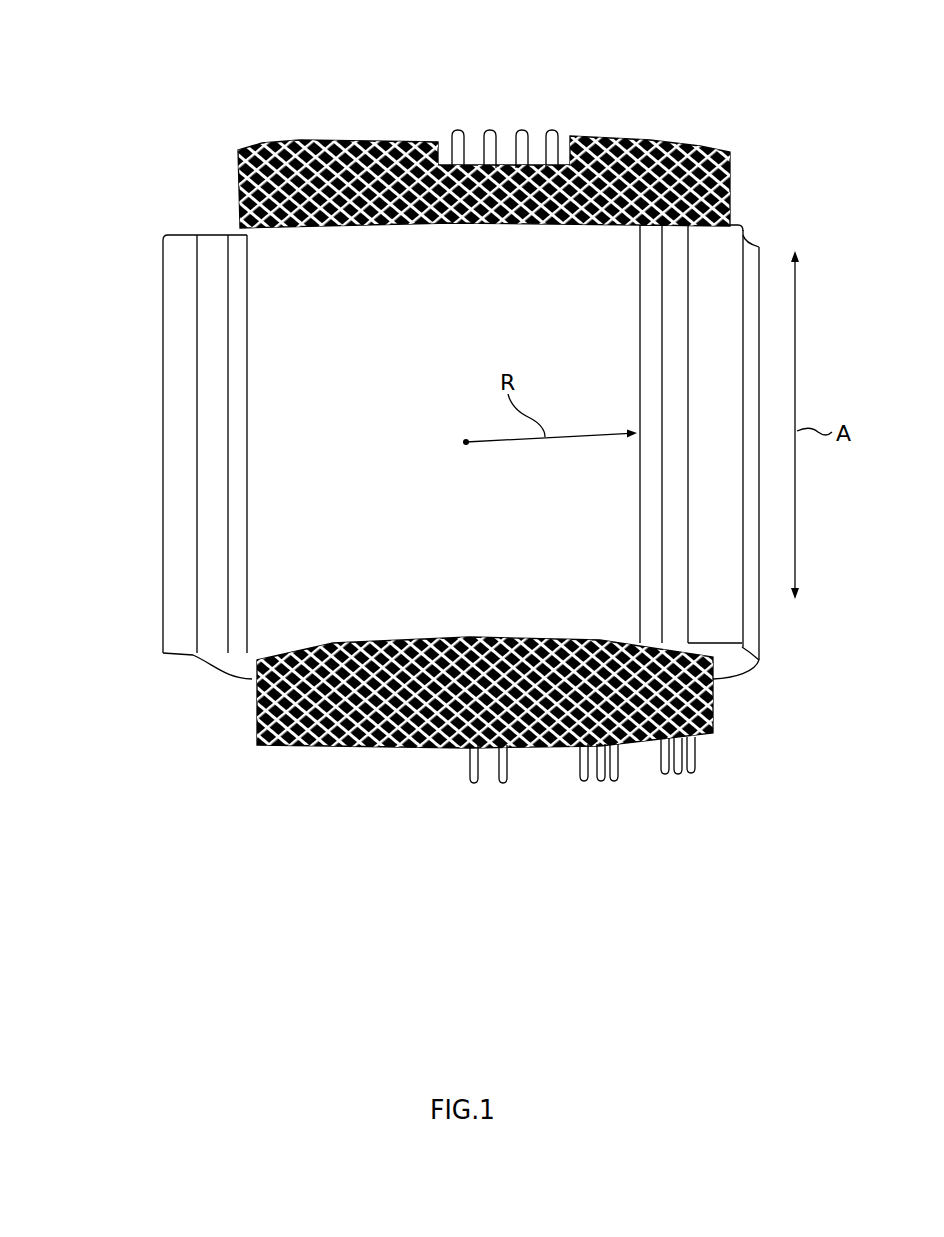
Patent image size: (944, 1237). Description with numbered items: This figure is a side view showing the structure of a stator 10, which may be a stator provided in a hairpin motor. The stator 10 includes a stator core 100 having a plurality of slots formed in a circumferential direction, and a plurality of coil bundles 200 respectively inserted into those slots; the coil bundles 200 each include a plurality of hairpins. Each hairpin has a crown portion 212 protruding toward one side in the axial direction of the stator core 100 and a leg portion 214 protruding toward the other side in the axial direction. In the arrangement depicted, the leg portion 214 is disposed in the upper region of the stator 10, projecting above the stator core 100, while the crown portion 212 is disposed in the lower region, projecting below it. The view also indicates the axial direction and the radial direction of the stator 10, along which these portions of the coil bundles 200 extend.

The stator 10 is at (234, 38).
The stator core 100 is at (181, 385).
The coil bundles 200 is at (218, 171).
The crown portion 212 is at (551, 786).
The leg portion 214 is at (576, 112).